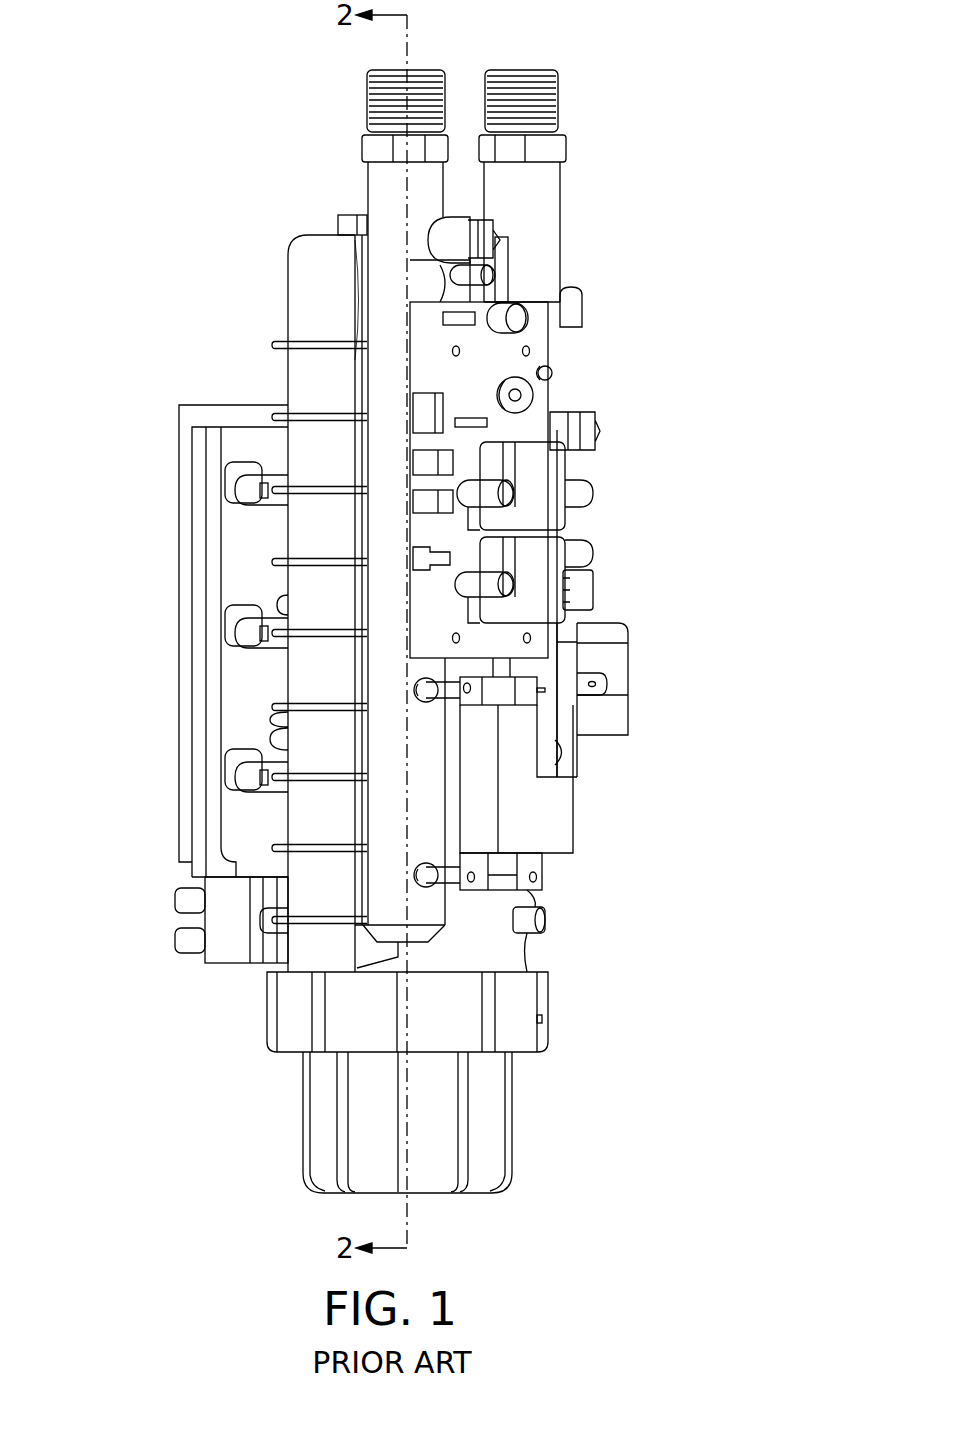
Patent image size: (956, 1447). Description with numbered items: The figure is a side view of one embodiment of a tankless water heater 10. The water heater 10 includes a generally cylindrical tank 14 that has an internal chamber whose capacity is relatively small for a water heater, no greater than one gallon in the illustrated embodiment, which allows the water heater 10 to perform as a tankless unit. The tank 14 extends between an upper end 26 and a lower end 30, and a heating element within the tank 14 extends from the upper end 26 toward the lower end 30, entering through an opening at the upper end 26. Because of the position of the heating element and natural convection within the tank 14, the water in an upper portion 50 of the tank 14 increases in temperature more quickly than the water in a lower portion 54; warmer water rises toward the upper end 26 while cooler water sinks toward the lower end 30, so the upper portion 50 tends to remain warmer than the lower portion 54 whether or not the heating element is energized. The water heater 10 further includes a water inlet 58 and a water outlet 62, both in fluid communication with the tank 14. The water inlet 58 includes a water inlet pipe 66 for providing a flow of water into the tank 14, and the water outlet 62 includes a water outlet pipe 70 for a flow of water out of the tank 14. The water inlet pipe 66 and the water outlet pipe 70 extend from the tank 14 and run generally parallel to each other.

The water heater 10 is at (664, 545).
The tank 14 is at (483, 372).
The upper end 26 is at (300, 290).
The lower end 30 is at (490, 1145).
The upper portion 50 is at (117, 270).
The lower portion 54 is at (117, 608).
The water inlet 58 is at (525, 70).
The water outlet 62 is at (410, 70).
The water inlet pipe 66 is at (540, 215).
The water outlet pipe 70 is at (386, 295).